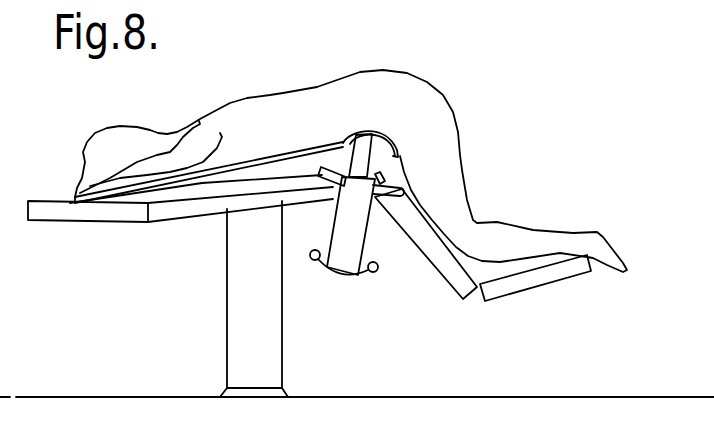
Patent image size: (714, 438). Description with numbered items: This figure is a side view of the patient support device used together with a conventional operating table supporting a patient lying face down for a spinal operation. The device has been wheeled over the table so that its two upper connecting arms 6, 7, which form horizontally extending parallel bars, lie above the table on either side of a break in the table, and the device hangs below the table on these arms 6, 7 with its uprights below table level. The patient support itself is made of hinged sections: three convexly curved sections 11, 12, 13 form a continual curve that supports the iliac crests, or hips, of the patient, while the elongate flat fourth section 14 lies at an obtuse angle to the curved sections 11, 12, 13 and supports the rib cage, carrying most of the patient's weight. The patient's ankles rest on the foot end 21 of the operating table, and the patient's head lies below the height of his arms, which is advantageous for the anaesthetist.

The connecting arm 6 is at (316, 178).
The fourth section 14 is at (200, 183).
The convexly curved section 11 is at (399, 135).
The convexly curved section 12 is at (361, 165).
The convexly curved section 13 is at (344, 226).
The connecting arm 7 is at (405, 231).
The foot end 21 is at (560, 278).